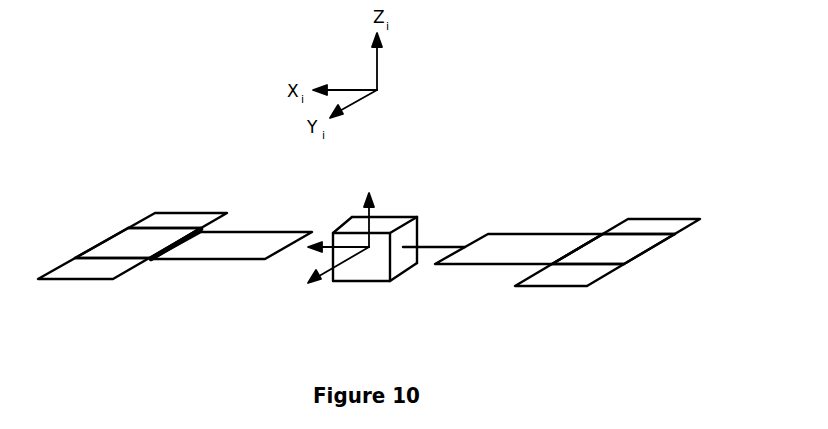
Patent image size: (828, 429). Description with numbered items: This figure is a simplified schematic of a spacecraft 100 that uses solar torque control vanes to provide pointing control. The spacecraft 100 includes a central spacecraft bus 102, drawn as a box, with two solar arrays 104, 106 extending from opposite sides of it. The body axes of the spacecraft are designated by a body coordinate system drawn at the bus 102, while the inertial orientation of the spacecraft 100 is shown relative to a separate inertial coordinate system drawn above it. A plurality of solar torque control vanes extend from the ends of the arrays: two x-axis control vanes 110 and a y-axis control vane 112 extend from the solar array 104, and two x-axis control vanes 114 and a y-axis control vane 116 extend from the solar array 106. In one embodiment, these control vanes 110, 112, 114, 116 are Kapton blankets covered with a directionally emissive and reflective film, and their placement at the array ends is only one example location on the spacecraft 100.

The spacecraft 100 is at (511, 79).
The spacecraft bus 102 is at (358, 267).
The solar array 104 is at (483, 257).
The solar array 106 is at (252, 238).
The x-axis control vanes 110 is at (665, 220).
The y-axis control vane 112 is at (614, 253).
The x-axis control vanes 114 is at (75, 268).
The y-axis control vane 116 is at (142, 242).